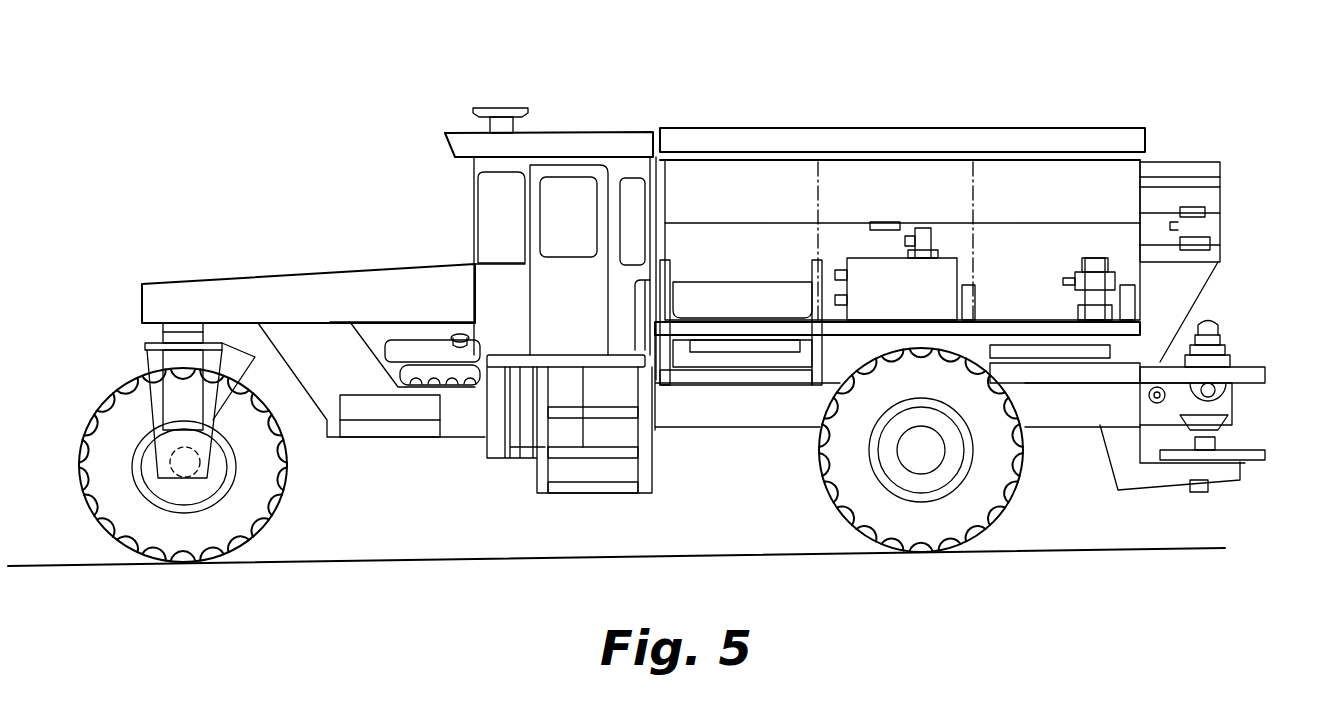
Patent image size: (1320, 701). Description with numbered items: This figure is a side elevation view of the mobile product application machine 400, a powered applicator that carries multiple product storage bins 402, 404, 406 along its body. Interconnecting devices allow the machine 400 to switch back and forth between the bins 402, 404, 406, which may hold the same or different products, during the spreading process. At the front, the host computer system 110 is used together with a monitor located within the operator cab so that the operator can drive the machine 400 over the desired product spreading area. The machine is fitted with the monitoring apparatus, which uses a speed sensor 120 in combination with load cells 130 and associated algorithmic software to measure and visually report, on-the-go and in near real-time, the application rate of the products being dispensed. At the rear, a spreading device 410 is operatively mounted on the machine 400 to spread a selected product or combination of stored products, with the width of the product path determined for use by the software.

The mobile product application machine 400 is at (400, 94).
The product storage bin 402 is at (706, 132).
The product storage bin 404 is at (880, 135).
The product storage bin 406 is at (1072, 126).
The host computer system 110 is at (493, 217).
The speed sensor 120 is at (230, 363).
The load cell 130 is at (855, 352).
The spreading device 410 is at (1238, 445).